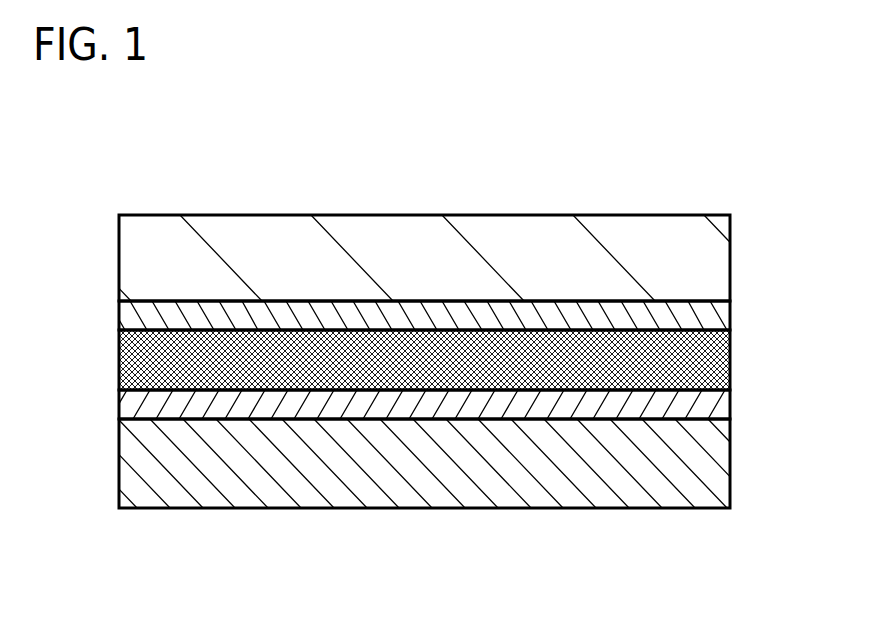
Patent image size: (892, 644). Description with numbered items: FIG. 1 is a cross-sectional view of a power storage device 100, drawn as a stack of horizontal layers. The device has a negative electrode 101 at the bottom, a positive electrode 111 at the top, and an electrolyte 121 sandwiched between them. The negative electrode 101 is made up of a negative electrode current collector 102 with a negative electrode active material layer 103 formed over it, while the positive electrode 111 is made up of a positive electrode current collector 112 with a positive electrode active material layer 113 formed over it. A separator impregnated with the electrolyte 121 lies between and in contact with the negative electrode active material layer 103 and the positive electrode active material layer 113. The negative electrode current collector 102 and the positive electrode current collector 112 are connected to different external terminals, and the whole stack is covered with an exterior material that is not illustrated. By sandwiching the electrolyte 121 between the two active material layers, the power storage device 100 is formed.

The power storage device 100 is at (203, 584).
The negative electrode 101 is at (110, 390).
The negative electrode current collector 102 is at (716, 466).
The negative electrode active material layer 103 is at (716, 410).
The positive electrode 111 is at (110, 222).
The positive electrode current collector 112 is at (716, 263).
The positive electrode active material layer 113 is at (716, 320).
The electrolyte 121 is at (716, 362).